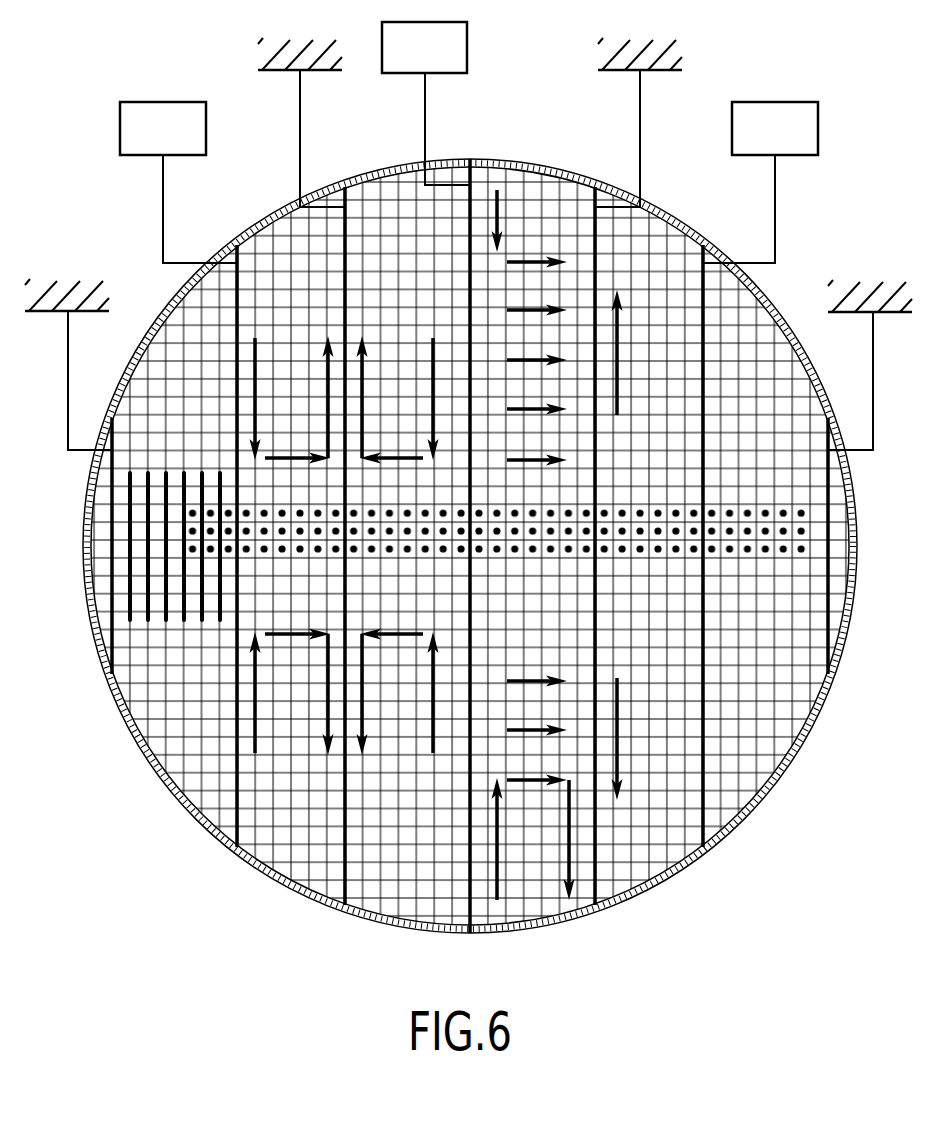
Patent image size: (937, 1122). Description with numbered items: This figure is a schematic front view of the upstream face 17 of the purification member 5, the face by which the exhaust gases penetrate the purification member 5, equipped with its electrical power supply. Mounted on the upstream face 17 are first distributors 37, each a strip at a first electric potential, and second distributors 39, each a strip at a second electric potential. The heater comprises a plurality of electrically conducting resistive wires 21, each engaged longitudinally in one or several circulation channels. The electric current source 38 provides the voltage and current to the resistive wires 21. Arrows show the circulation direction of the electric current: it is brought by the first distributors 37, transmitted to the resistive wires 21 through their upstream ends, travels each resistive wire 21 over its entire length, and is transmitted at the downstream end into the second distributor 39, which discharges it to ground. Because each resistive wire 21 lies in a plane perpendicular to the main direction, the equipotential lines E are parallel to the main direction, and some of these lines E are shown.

The purification member 5 is at (137, 257).
The upstream face 17 is at (165, 449).
The resistive wires 21 is at (694, 549).
The first distributor 37 is at (240, 288).
The electric current source 38 is at (469, 142).
The second distributor 39 is at (345, 220).
The equipotential lines E is at (182, 591).